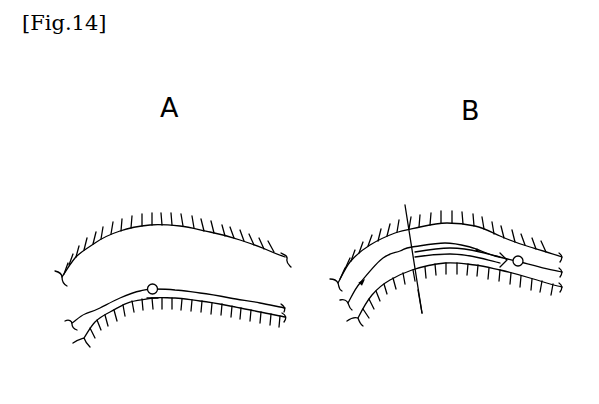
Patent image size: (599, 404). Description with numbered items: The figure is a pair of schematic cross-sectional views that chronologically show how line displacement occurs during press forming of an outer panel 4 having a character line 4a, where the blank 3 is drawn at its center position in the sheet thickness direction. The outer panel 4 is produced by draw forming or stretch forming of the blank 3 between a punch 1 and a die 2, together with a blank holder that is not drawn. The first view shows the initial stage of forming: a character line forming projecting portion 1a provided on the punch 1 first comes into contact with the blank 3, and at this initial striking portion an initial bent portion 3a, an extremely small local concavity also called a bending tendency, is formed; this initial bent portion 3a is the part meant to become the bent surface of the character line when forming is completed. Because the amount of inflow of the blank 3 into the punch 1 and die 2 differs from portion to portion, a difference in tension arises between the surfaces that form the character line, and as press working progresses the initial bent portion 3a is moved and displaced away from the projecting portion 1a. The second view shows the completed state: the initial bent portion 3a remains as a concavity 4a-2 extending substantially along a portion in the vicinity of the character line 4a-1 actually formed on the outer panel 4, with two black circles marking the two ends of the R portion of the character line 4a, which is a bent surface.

In FIG. 14A, the punch 1 is at (157, 303).
In FIG. 14B, the punch 1 is at (458, 275).
In FIG. 14A, the character line forming projecting portion 1a is at (150, 300).
In FIG. 14A, the die 2 is at (163, 220).
In FIG. 14B, the die 2 is at (447, 225).
In FIG. 14A, the blank 3 is at (94, 305).
In FIG. 14A, the initial bent portion 3a is at (155, 283).
In FIG. 14B, the outer panel 4 is at (493, 240).
In FIG. 14B, the character line 4a is at (409, 248).
In FIG. 14B, the character line actually formed 4a-1 is at (432, 315).
In FIG. 14B, the concavity 4a-2 is at (520, 267).